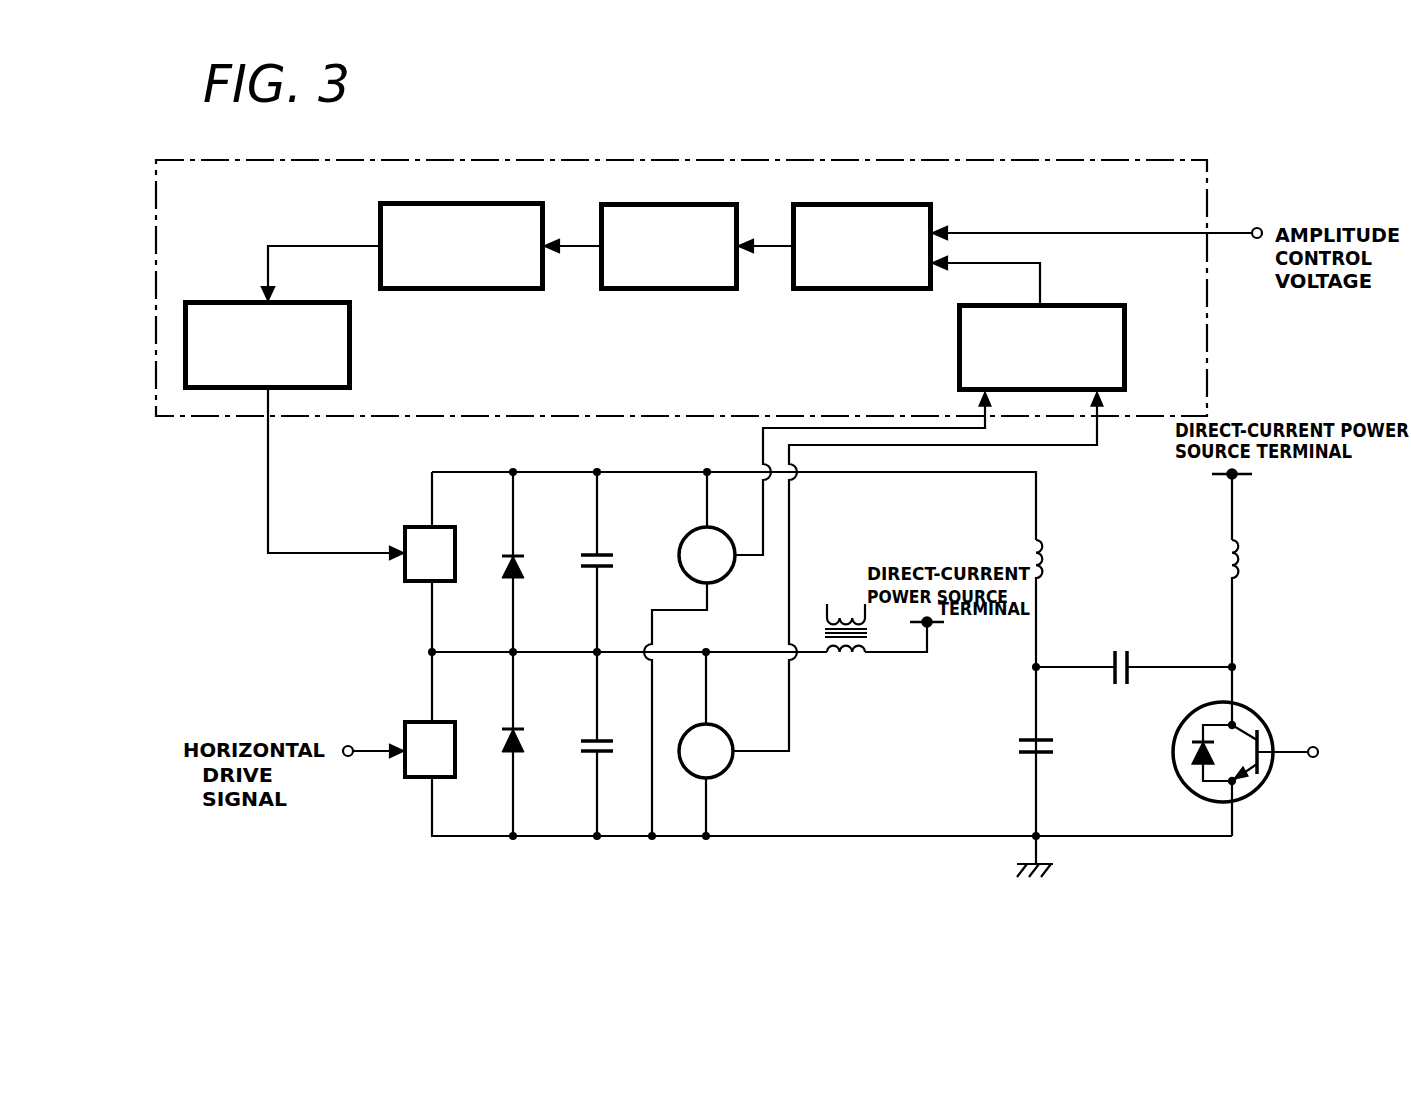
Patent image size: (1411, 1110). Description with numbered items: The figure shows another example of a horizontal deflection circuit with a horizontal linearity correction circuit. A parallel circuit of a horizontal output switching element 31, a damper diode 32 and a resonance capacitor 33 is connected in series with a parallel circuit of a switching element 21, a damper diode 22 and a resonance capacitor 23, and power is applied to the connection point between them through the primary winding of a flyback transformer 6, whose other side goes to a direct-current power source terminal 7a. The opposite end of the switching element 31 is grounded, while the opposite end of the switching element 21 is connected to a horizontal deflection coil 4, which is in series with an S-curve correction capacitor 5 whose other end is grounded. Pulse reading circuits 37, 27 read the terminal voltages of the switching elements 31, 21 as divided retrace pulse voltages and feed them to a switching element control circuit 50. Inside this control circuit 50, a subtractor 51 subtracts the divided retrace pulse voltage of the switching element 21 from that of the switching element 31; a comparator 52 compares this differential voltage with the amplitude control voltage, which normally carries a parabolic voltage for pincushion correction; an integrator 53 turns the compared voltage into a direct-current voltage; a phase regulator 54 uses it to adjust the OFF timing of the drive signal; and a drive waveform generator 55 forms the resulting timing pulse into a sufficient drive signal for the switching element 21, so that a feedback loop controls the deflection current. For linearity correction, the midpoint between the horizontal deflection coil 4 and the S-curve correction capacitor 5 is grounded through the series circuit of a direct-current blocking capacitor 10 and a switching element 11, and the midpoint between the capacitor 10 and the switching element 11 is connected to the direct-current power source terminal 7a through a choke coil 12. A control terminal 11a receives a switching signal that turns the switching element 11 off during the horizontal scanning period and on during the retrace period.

The horizontal deflection coil 4 is at (1050, 562).
The S-curve correction capacitor 5 is at (1040, 755).
The flyback transformer 6 is at (846, 660).
The direct-current power source terminal 7a is at (930, 626).
The capacitor for blocking the direct current 10 is at (1120, 686).
The switching element 11 is at (1250, 705).
The control terminal 11a is at (1313, 745).
The choke coil 12 is at (1245, 565).
The switching element 21 is at (407, 584).
The damper diode 22 is at (508, 549).
The resonance capacitor 23 is at (606, 549).
The pulse reading circuit 27 is at (726, 575).
The switching element of horizontal output 31 is at (415, 781).
The damper diode 32 is at (508, 753).
The resonance capacitor 33 is at (592, 755).
The pulse reading circuit 37 is at (722, 772).
The switching element control circuit 50 is at (630, 160).
The subtractor 51 is at (1127, 350).
The comparator 52 is at (860, 292).
The integrator 53 is at (667, 292).
The phase regulator 54 is at (457, 292).
The drive waveform generator 55 is at (352, 348).